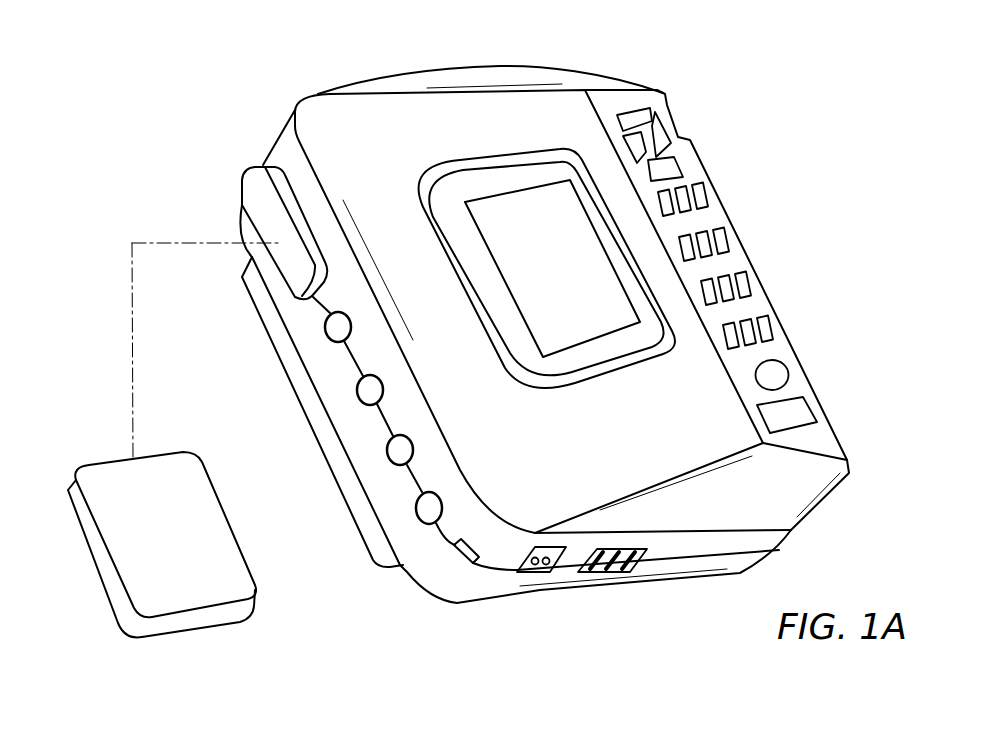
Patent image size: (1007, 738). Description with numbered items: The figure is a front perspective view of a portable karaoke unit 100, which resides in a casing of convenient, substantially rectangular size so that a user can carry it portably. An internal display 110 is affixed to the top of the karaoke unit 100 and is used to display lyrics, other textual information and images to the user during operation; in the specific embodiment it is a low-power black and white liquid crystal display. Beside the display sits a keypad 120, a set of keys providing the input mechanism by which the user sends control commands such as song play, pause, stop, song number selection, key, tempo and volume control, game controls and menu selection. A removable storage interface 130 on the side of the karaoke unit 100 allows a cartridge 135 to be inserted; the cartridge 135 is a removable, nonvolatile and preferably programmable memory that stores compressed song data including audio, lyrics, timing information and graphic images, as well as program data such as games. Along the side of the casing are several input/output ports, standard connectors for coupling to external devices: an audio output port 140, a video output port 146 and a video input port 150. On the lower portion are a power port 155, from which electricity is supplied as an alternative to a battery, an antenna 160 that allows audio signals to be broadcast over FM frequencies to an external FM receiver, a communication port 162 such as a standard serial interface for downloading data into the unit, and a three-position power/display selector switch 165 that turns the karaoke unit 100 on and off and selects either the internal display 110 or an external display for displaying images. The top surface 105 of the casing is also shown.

The portable karaoke unit 100 is at (800, 72).
The top surface of housing 105 is at (487, 67).
The internal display 110 is at (632, 367).
The keypad 120 is at (722, 224).
The removable storage interface 130 is at (229, 298).
The cartridge 135 is at (112, 458).
The audio output port 140 is at (368, 390).
The video output port 146 is at (398, 449).
The video input port 150 is at (428, 506).
The power port 155 is at (540, 573).
The antenna 160 is at (460, 556).
The communication port 162 is at (336, 327).
The power/display selector switch 165 is at (621, 572).